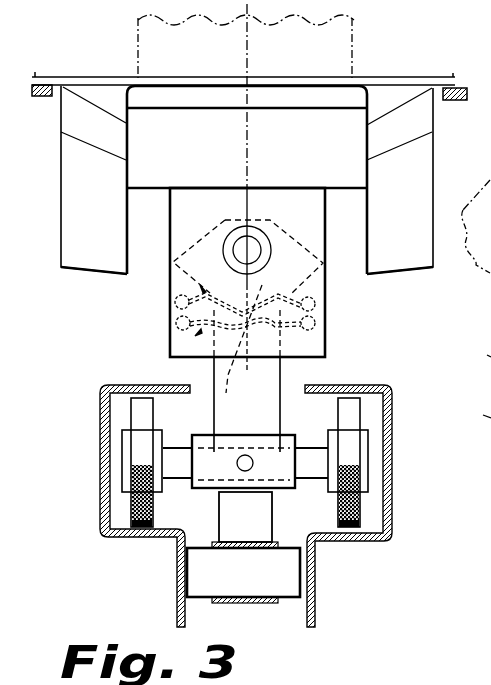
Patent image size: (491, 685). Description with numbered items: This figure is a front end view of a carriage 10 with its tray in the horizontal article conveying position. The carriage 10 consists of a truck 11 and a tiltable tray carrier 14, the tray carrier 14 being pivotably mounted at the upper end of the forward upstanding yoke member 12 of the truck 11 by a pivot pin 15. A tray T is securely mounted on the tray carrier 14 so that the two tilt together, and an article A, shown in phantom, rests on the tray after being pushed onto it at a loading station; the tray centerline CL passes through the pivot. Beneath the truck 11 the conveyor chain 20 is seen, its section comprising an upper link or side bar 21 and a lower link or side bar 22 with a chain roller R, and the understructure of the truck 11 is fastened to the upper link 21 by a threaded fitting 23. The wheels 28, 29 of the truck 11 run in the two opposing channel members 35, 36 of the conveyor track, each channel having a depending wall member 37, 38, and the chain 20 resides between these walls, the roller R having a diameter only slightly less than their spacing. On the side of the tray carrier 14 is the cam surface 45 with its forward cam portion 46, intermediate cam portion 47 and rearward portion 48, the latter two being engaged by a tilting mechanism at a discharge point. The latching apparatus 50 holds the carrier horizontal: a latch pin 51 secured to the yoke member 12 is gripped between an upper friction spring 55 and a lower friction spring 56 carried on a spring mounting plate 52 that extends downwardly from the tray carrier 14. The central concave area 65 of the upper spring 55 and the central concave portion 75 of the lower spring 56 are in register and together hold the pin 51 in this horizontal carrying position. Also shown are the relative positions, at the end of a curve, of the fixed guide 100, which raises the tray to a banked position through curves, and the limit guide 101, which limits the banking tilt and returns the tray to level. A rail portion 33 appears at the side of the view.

The carriage 10 is at (270, 207).
The truck 11 is at (216, 468).
The forward upstanding yoke member 12 is at (300, 242).
The tray carrier 14 is at (208, 128).
The pivot pin 15 is at (249, 247).
The conveyor chain 20 is at (215, 606).
The upper link or side bar 21 is at (260, 540).
The lower link or side bar 22 is at (250, 607).
The threaded fitting 23 is at (238, 518).
The wheel 28 is at (138, 415).
The wheel 29 is at (352, 412).
The rail / guide track 33 is at (476, 353).
The channel member 35 is at (125, 506).
The channel member 36 is at (371, 503).
The depending wall member 37 is at (176, 587).
The depending wall member 38 is at (316, 587).
The cam surface 45 is at (76, 177).
The forward cam portion 46 is at (107, 128).
The intermediate cam portion 47 is at (103, 177).
The rearward cam portion 48 is at (95, 258).
The latching apparatus 50 is at (338, 315).
The latch pin 51 is at (244, 342).
The spring mounting plate 52 is at (327, 273).
The upper friction spring 55 is at (187, 261).
The lower friction spring 56 is at (197, 335).
The central concave area 65 is at (245, 302).
The central concave portion 75 is at (247, 381).
The guide 100 is at (449, 101).
The limit guide 101 is at (46, 84).
The article A is at (357, 28).
The tray centerline CL is at (251, 52).
The tray T is at (372, 77).
The chain roller R is at (243, 572).